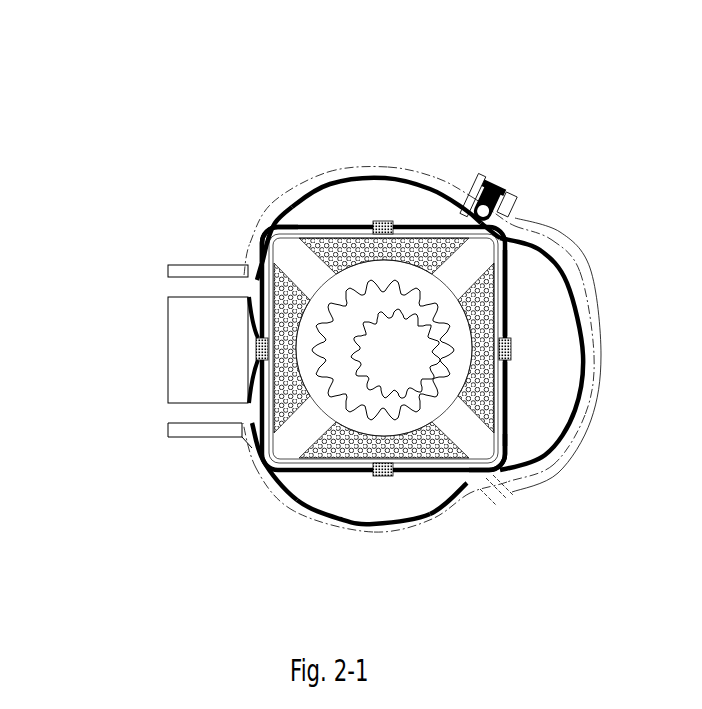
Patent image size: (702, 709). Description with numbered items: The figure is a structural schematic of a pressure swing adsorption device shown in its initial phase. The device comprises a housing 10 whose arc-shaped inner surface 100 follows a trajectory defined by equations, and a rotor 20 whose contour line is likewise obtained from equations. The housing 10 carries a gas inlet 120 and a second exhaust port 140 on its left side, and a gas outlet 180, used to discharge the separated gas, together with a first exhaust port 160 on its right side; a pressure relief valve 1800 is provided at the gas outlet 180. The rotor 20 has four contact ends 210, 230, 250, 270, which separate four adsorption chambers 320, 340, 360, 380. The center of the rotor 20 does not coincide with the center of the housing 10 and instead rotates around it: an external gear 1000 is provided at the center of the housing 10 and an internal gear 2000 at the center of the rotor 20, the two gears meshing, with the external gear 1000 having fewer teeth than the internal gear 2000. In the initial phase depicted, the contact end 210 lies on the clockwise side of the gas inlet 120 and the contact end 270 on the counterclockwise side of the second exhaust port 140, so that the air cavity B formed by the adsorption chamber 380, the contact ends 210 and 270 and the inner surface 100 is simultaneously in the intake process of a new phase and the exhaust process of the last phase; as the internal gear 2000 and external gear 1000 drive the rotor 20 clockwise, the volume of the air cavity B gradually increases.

The housing 10 is at (440, 172).
The rotor 20 is at (360, 240).
The arc-shaped inner surface 100 is at (410, 180).
The gas inlet 120 is at (222, 283).
The second exhaust port 140 is at (183, 413).
The first exhaust port 160 is at (465, 494).
The gas outlet 180 is at (492, 200).
The valve housing 1800 is at (488, 183).
The contact end 210 is at (264, 217).
The contact end 230 is at (493, 230).
The contact end 250 is at (470, 482).
The contact end 270 is at (261, 468).
The adsorption chamber 320 is at (303, 237).
The adsorption chamber 340 is at (510, 287).
The adsorption chamber 360 is at (284, 497).
The adsorption chamber 380 is at (255, 232).
The external gear 1000 is at (433, 366).
The internal gear 2000 is at (482, 468).
The air cavity B is at (243, 263).